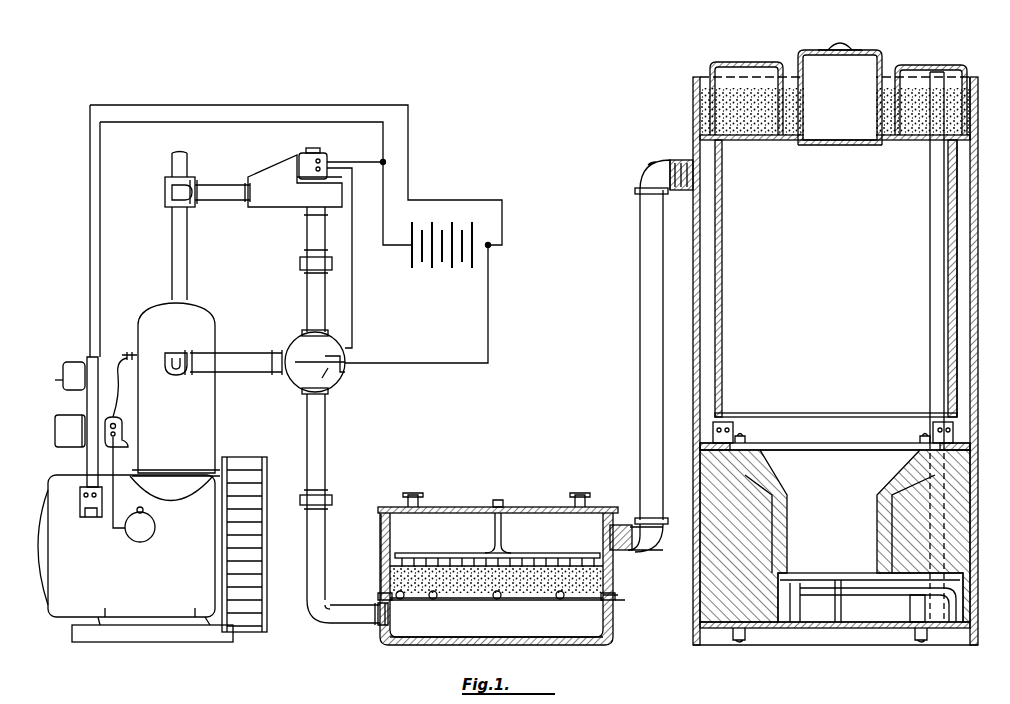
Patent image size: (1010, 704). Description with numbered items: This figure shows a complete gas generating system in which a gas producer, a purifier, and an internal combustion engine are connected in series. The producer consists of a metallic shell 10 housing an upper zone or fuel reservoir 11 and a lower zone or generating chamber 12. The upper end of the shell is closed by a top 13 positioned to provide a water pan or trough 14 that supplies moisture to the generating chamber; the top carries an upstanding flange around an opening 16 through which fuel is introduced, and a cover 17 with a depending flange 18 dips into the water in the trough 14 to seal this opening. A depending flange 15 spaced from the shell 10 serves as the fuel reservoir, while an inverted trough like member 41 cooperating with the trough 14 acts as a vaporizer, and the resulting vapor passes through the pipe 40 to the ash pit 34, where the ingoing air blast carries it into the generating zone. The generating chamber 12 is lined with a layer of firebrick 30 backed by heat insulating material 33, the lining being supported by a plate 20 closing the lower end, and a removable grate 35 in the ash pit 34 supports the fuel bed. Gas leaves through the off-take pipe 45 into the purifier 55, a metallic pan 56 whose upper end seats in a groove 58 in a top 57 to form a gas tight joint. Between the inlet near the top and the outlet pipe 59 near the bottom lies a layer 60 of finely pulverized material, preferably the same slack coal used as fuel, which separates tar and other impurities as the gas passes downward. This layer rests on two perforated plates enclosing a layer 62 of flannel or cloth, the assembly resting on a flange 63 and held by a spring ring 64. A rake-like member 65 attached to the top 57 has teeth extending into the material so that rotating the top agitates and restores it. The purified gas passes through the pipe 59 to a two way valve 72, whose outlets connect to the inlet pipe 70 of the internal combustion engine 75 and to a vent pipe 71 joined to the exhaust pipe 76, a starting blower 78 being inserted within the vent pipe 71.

The metallic shell 10 is at (978, 331).
The fuel reservoir 11 is at (903, 232).
The generating chamber 12 is at (860, 519).
The top 13 is at (958, 140).
The water pan or trough 14 is at (968, 84).
The depending flange 15 is at (957, 184).
The opening 16 is at (850, 92).
The cover 17 is at (868, 50).
The depending flange 18 is at (797, 62).
The plate 20 is at (722, 628).
The layer of firebrick 30 is at (890, 560).
The layer of heat insulating material 33 is at (945, 487).
The ash pit 34 is at (962, 602).
The removable grate 35 is at (838, 580).
The pipe 40 is at (936, 290).
The inverted trough like member 41 is at (935, 65).
The off-take pipe 45 is at (640, 229).
The purifier 55 is at (475, 527).
The metallic pan 56 is at (603, 584).
The top 57 is at (525, 510).
The groove 58 is at (380, 512).
The pipe 59 is at (340, 605).
The layer of finely pulverized material 60 is at (380, 556).
The layer of filamentous material 62 is at (603, 620).
The flange 63 is at (603, 605).
The spring ring 64 is at (603, 575).
The rake-like member 65 is at (437, 553).
The inlet pipe 70 is at (240, 353).
The vent pipe 71 is at (316, 300).
The two way valve 72 is at (300, 380).
The internal combustion engine 75 is at (192, 410).
The exhaust pipe 76 is at (172, 163).
The starting blower 78 is at (268, 177).